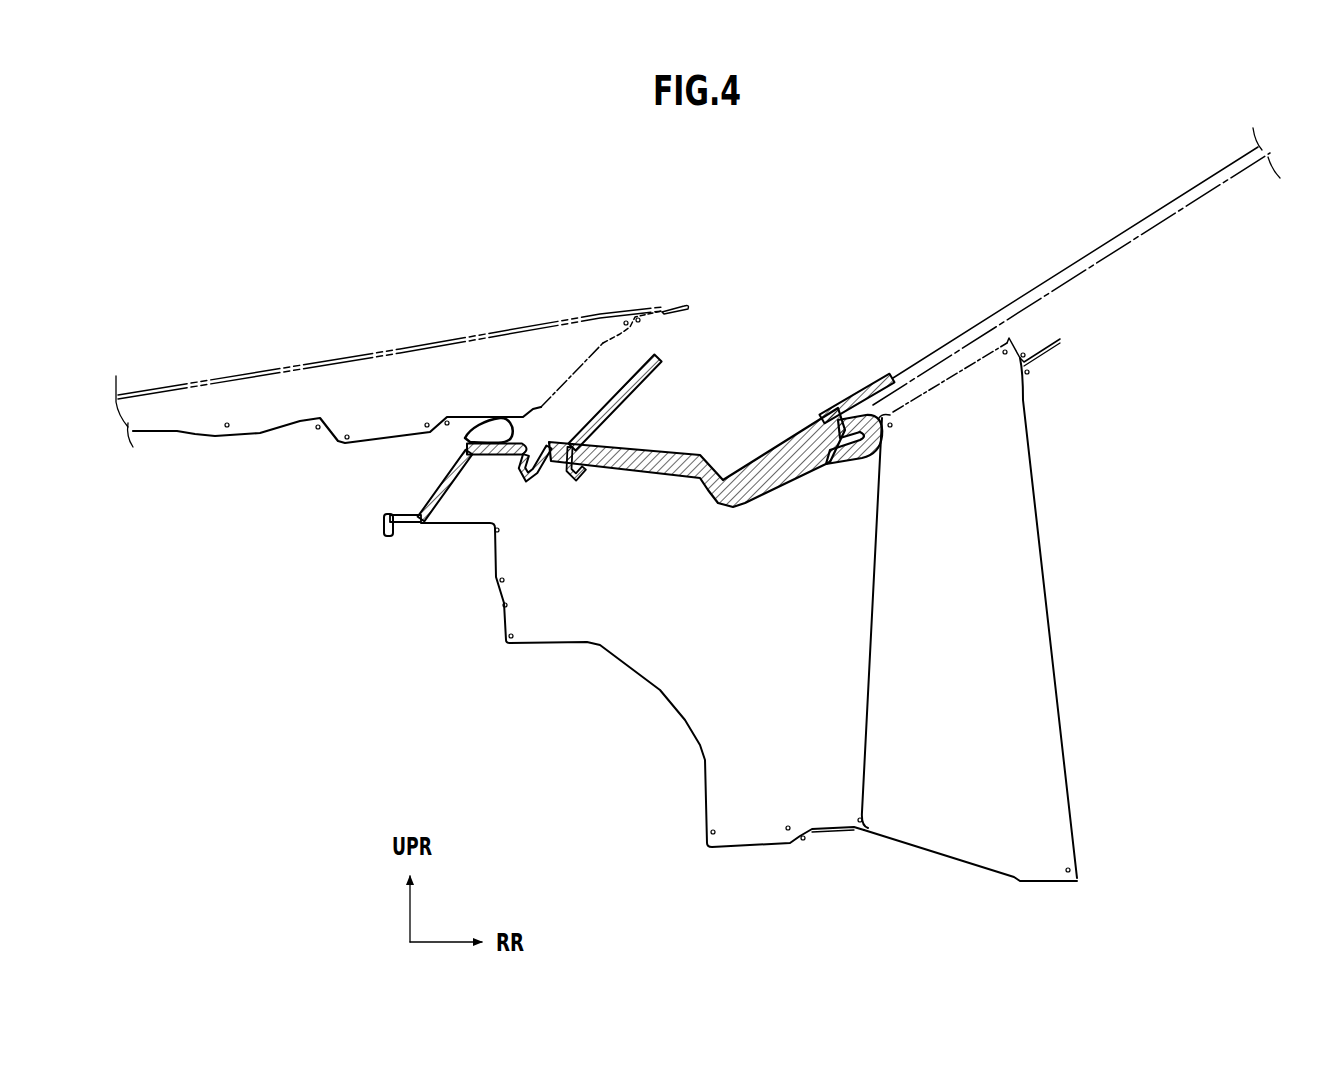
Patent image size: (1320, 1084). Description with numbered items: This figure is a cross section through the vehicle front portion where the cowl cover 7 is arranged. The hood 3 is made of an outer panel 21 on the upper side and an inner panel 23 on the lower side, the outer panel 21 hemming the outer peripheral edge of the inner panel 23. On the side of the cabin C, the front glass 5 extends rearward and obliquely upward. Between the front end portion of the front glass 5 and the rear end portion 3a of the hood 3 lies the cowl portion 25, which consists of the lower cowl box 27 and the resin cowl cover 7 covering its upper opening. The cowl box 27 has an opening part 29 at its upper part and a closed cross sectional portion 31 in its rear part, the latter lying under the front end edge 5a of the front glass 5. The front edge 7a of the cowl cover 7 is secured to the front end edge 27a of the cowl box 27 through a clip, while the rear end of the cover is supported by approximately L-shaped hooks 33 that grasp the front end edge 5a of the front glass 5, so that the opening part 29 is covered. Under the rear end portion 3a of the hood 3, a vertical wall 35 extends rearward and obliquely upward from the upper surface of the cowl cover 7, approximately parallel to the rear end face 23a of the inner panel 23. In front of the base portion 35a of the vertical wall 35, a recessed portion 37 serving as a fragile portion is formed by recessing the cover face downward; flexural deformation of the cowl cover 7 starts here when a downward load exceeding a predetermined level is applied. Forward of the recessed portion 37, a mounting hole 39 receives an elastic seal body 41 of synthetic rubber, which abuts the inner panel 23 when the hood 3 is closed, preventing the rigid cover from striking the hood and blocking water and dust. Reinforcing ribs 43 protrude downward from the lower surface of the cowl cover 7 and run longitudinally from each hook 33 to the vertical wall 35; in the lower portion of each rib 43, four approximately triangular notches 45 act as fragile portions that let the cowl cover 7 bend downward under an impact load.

The hood 3 is at (375, 348).
The rear end portion of the hood 3a is at (672, 300).
The front glass 5 is at (1150, 212).
The front end edge of the front glass 5a is at (853, 404).
The cowl cover 7 is at (707, 452).
The front edge of the cowl cover 7a is at (403, 516).
The outer panel 21 is at (291, 366).
The inner panel 23 is at (260, 442).
The rear end face of the inner panel 23a is at (572, 373).
The cowl portion 25 is at (760, 406).
The cowl box 27 is at (766, 850).
The front end edge of the cowl box 27a is at (418, 535).
The opening part 29 is at (713, 520).
The closed cross sectional portion 31 is at (1020, 680).
The hooks 33 is at (856, 470).
The vertical wall 35 is at (620, 382).
The base portion of the vertical wall 35a is at (565, 440).
The recessed portion 37 is at (527, 485).
The mounting hole 39 is at (488, 460).
The elastic seal body 41 is at (482, 424).
The reinforcing ribs 43 is at (808, 475).
The notches 45 is at (663, 483).
The cabin C is at (1224, 294).